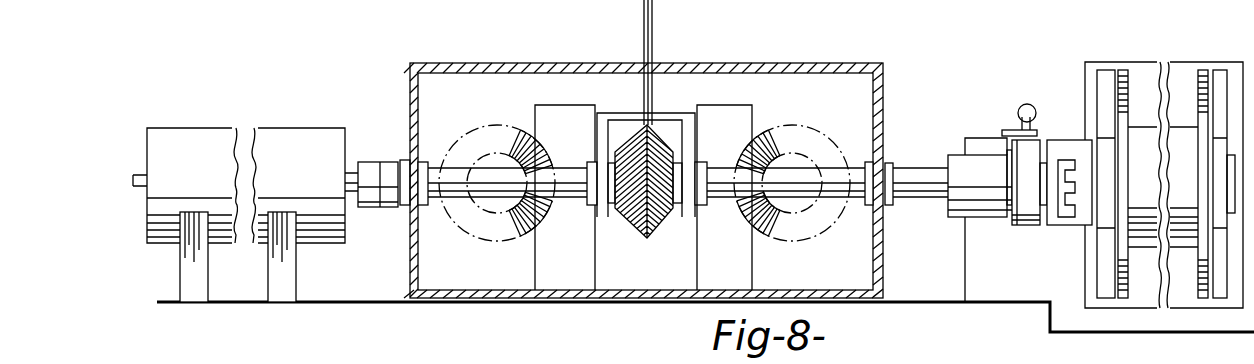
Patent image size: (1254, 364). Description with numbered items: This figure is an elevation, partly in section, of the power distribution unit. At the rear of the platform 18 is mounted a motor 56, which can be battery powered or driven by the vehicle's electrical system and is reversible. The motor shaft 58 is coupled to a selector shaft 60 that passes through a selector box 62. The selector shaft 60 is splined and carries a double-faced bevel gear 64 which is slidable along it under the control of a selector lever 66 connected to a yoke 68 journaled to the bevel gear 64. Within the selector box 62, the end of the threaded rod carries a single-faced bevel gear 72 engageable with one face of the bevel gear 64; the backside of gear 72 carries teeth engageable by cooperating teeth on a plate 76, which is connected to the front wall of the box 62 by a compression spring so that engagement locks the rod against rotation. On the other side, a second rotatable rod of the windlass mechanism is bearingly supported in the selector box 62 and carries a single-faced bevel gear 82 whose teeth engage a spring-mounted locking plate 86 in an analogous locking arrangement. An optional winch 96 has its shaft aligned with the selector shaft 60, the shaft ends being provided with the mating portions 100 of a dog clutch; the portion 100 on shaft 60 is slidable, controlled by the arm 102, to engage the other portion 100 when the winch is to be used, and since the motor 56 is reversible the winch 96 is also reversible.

The platform 18 is at (170, 301).
The motor 56 is at (205, 140).
The motor shaft 58 is at (350, 177).
The selector shaft 60 is at (833, 178).
The selector box 62 is at (883, 101).
The double-faced bevel gear 64 is at (622, 118).
The selector lever 66 is at (652, 10).
The yoke 68 is at (686, 110).
The single-faced bevel gear 72 is at (799, 127).
The plate 76 is at (732, 115).
The single-faced bevel gear 82 is at (498, 122).
The locking plate 86 is at (572, 107).
The winch 96 is at (1178, 130).
The mating portions of a dog clutch 100 is at (1069, 226).
The arm 102 is at (1037, 130).